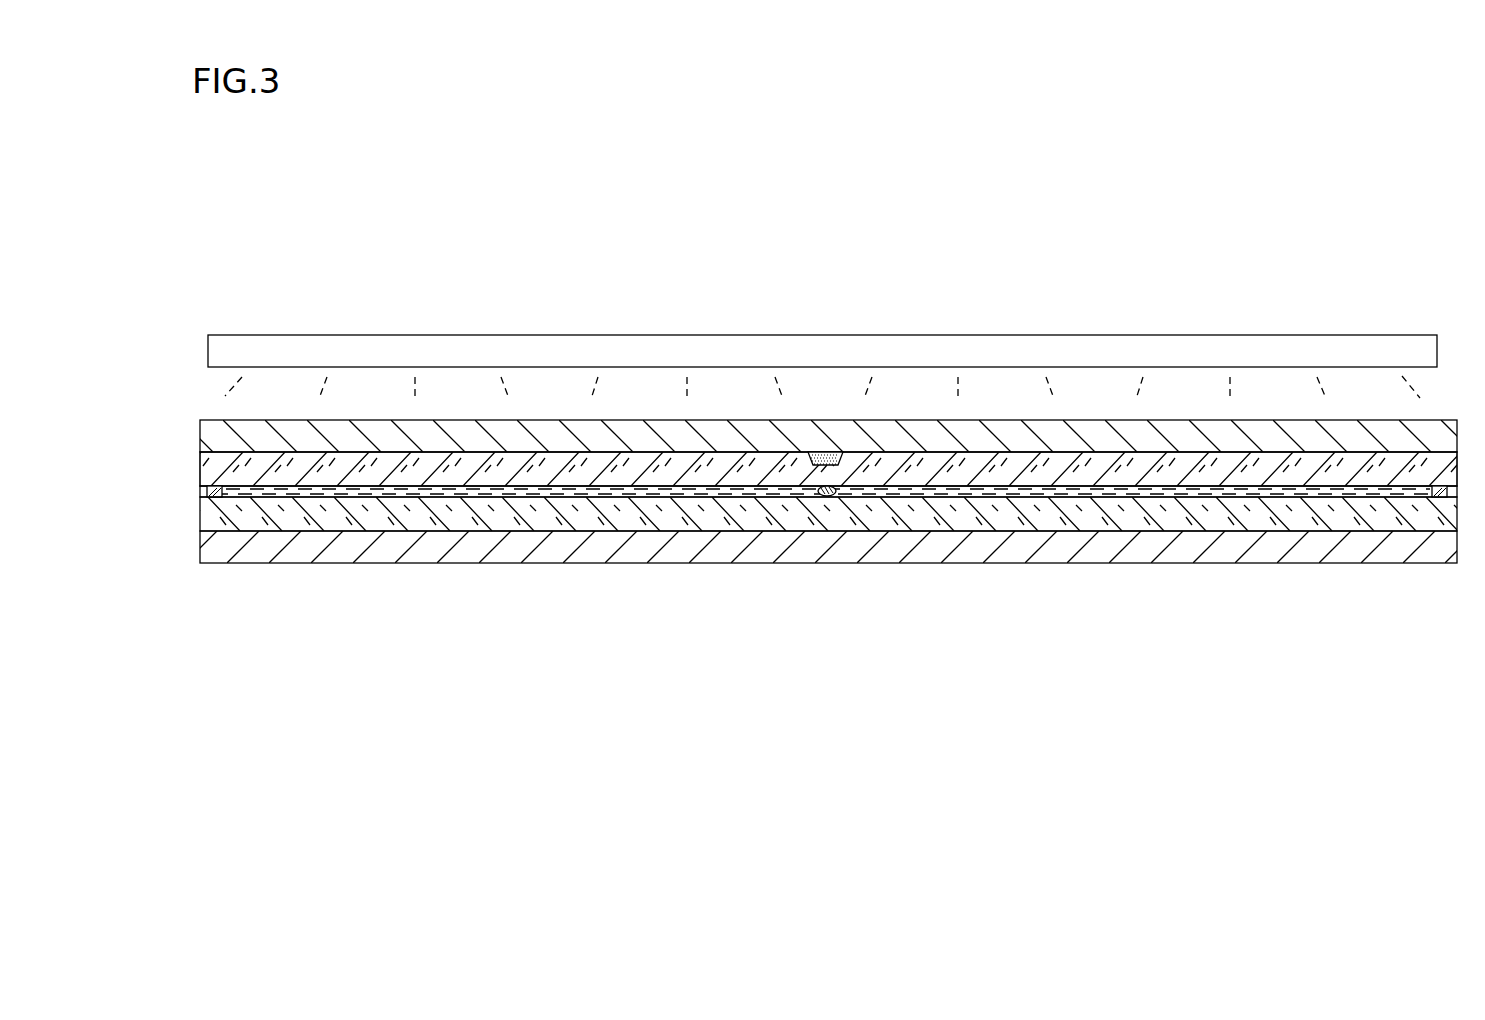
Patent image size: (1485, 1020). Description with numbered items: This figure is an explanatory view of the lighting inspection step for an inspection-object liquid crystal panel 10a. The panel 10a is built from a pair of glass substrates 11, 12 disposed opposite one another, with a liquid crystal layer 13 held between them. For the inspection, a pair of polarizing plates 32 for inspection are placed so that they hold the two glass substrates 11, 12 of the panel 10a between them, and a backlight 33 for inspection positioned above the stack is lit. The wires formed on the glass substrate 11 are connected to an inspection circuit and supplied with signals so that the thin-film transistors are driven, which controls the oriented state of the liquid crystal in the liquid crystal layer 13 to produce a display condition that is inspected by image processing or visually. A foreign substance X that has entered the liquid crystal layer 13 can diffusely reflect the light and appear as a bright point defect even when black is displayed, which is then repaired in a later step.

The inspection-object liquid crystal panel 10a is at (791, 460).
The glass substrate 11 is at (1203, 463).
The glass substrate 12 is at (1100, 520).
The liquid crystal layer 13 is at (1015, 492).
The polarizing plates for inspection 32 is at (310, 547).
The backlight for inspection 33 is at (1040, 350).
The foreign substance X is at (822, 495).